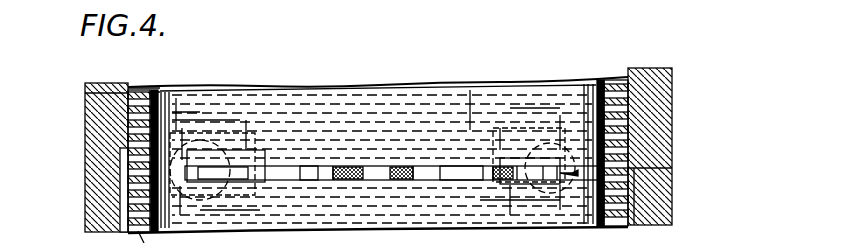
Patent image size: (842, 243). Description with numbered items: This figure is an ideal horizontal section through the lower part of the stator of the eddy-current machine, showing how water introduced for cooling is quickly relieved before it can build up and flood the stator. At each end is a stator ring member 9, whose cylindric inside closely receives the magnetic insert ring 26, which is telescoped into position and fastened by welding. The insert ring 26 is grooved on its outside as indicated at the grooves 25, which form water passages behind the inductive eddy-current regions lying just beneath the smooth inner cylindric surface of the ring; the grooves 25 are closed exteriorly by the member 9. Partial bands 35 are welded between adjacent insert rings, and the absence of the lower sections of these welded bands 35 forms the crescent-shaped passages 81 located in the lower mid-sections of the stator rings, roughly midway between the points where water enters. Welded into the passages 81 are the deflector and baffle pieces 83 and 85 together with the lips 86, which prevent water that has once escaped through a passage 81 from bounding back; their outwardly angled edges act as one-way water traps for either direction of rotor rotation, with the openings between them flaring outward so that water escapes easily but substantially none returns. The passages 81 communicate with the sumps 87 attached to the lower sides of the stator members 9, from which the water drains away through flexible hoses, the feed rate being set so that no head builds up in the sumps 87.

The stator ring member 9 is at (672, 109).
The grooves 25 is at (87, 99).
The magnetic insert ring 26 is at (150, 92).
The partial band 35 is at (128, 170).
The crescent-shaped passage 81 is at (298, 173).
The deflector and baffle piece 83 is at (255, 170).
The deflector and baffle piece 85 is at (382, 173).
The lip 86 is at (205, 165).
The sump 87 is at (85, 132).